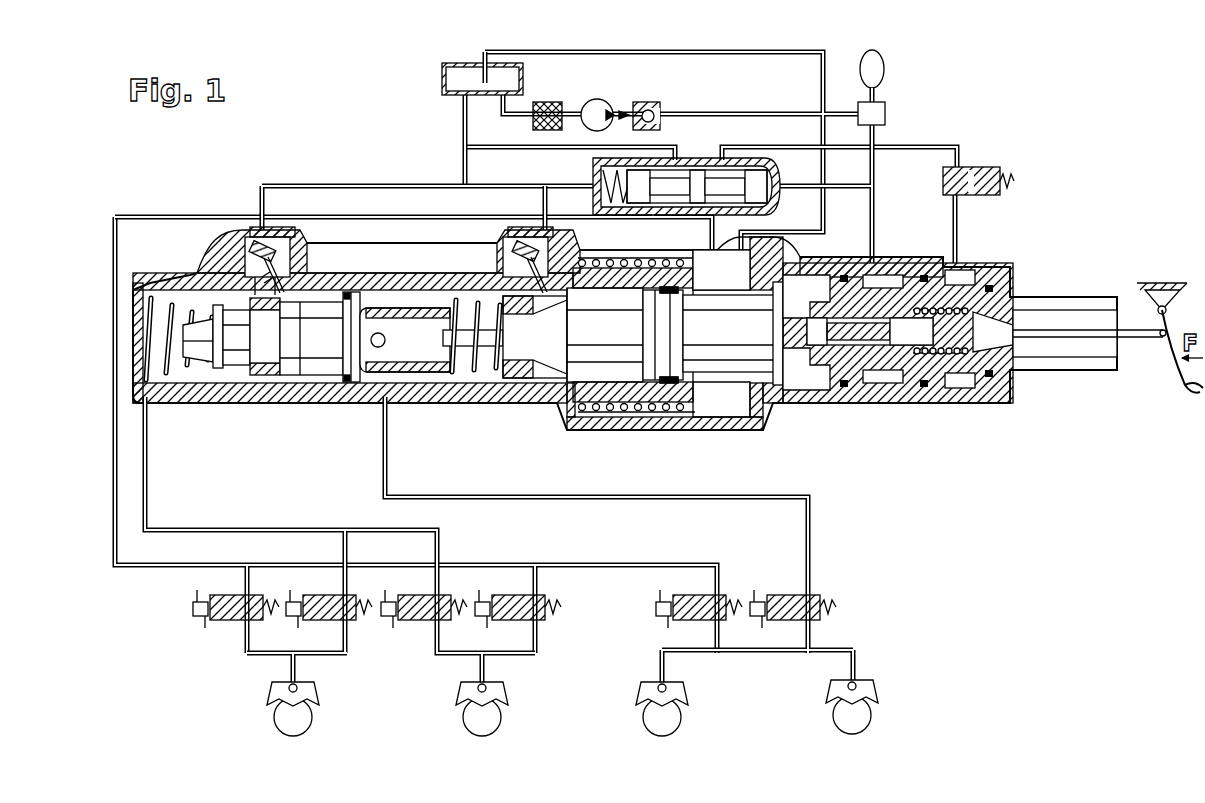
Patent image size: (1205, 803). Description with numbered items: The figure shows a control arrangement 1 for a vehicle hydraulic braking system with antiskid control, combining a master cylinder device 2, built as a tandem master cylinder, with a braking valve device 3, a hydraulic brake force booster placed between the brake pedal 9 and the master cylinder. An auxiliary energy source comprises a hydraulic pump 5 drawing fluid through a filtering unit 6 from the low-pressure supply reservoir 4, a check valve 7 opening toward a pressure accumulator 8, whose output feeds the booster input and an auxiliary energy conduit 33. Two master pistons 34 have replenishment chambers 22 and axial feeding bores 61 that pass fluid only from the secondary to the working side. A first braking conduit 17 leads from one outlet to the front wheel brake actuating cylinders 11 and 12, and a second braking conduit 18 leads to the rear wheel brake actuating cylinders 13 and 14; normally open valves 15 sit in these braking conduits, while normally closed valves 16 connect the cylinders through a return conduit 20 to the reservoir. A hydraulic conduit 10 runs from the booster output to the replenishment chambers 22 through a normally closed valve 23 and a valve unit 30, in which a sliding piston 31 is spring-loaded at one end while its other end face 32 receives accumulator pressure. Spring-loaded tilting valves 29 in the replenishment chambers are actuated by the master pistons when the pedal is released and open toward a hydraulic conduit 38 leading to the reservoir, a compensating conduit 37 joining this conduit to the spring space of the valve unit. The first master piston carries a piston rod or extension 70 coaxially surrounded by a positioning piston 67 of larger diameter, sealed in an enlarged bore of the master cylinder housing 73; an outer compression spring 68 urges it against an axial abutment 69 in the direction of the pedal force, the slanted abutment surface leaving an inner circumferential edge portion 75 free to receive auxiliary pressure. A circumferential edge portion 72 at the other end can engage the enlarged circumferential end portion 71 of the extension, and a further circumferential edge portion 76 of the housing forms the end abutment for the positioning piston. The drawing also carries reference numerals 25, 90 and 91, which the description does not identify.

The control arrangement 1 is at (233, 170).
The master cylinder device 2 is at (262, 420).
The braking valve device 3 is at (912, 414).
The low-pressure hydraulic supply reservoir 4 is at (442, 76).
The hydraulic pump 5 is at (597, 99).
The filtering unit 6 is at (547, 102).
The check valve 7 is at (647, 102).
The pressure accumulator 8 is at (885, 73).
The brake pedal 9 is at (1180, 388).
The hydraulic conduit 10 is at (957, 229).
The wheel brake actuating cylinder 11 is at (306, 686).
The wheel brake actuating cylinder 12 is at (495, 686).
The wheel brake actuating cylinder 13 is at (675, 686).
The wheel brake actuating cylinder 14 is at (865, 683).
The two-port two-position valve 15 is at (345, 623).
The two-port two-position valve 16 is at (232, 624).
The first braking conduit 17 is at (148, 471).
The second braking conduit 18 is at (388, 473).
The return conduit 20 is at (465, 140).
The replenishment chamber 22 is at (243, 257).
The two-port two-position valve 23 is at (970, 167).
The valve spool 25 is at (560, 227).
The tilting valve 29 is at (260, 232).
The valve unit 30 is at (692, 155).
The sliding piston 31 is at (747, 219).
The end face 32 is at (760, 150).
The auxiliary energy conduit 33 is at (847, 192).
The master piston 34 is at (307, 356).
The compensating conduit 37 is at (545, 186).
The hydraulic conduit 38 is at (295, 185).
The axial feeding bore 61 is at (307, 277).
The positioning piston 67 is at (665, 403).
The outer compression spring 68 is at (620, 403).
The axial abutment 69 is at (580, 400).
The piston rod or extension 70 is at (567, 372).
The enlarged circumferential end portion 71 is at (770, 386).
The circumferential edge portion 72 is at (730, 333).
The master cylinder housing 73 is at (477, 398).
The inner circumferential edge portion 75 is at (600, 254).
The further circumferential edge portion 76 is at (757, 263).
The sleeve 90 is at (587, 403).
The seal 91 is at (697, 403).